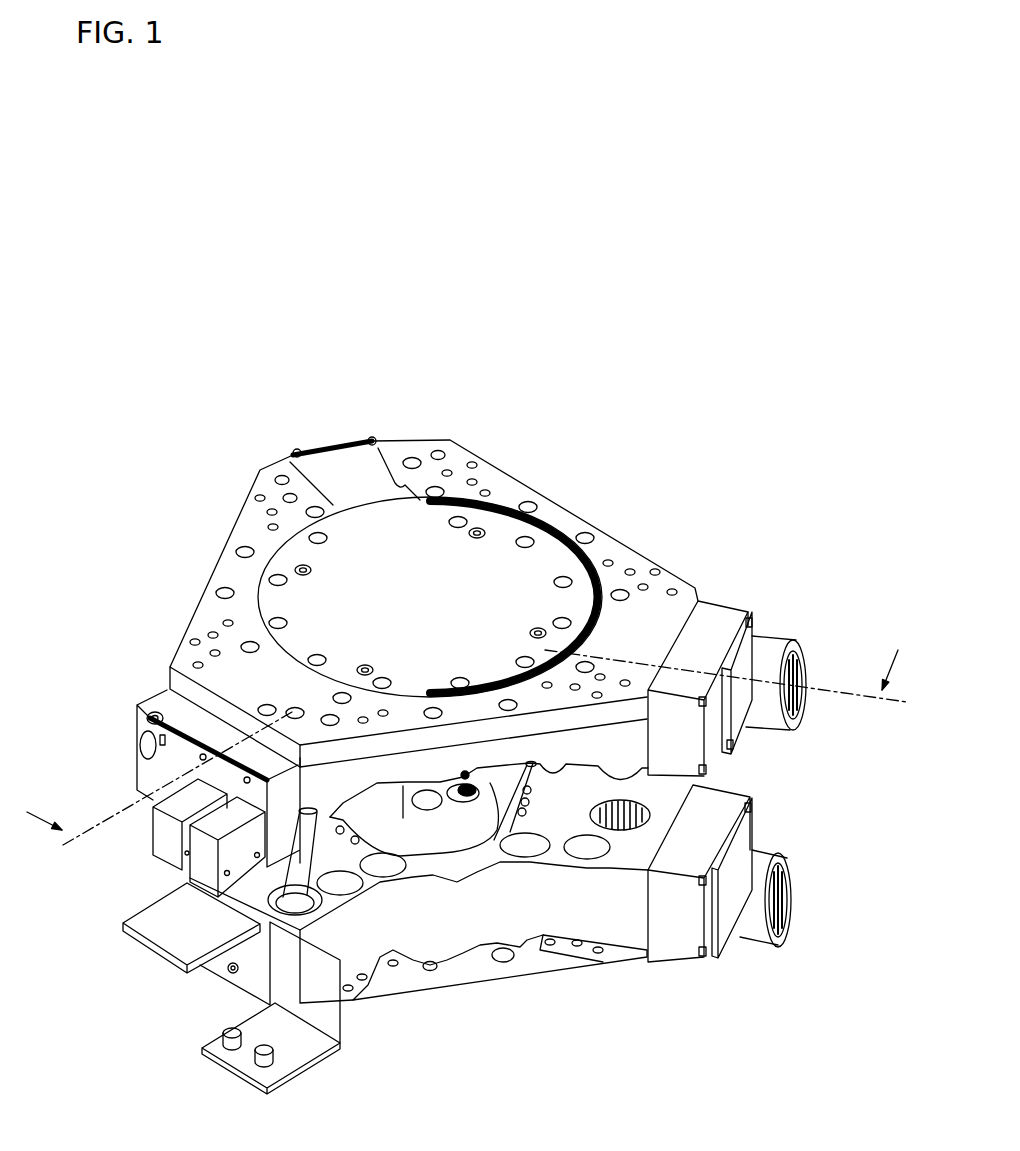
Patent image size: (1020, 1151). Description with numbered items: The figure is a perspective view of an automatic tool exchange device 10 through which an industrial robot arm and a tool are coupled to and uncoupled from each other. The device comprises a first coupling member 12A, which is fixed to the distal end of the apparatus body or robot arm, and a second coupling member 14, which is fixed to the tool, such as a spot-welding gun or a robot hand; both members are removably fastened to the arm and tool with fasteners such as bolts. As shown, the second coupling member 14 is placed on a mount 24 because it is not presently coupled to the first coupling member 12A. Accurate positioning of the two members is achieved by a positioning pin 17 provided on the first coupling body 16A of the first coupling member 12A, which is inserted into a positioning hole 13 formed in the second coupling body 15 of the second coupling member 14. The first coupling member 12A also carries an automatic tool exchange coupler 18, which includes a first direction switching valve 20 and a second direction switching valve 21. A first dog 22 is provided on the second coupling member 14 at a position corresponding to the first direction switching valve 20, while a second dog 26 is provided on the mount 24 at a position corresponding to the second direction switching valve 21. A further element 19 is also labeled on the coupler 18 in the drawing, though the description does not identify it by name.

The automatic tool exchange device 10 is at (590, 426).
The first coupling member 12A is at (637, 507).
The positioning hole 13 is at (320, 897).
The second coupling member 14 is at (624, 988).
The second coupling body 15 is at (523, 900).
The first coupling body 16A is at (243, 577).
The positioning pin 17 is at (355, 858).
The automatic tool exchange coupler 18 is at (123, 677).
The fixing screw 19 is at (168, 706).
The first direction switching valve 20 is at (165, 838).
The second direction switching valve 21 is at (205, 860).
The first dog 22 is at (167, 932).
The mount 24 is at (825, 1106).
The second dog 26 is at (260, 987).